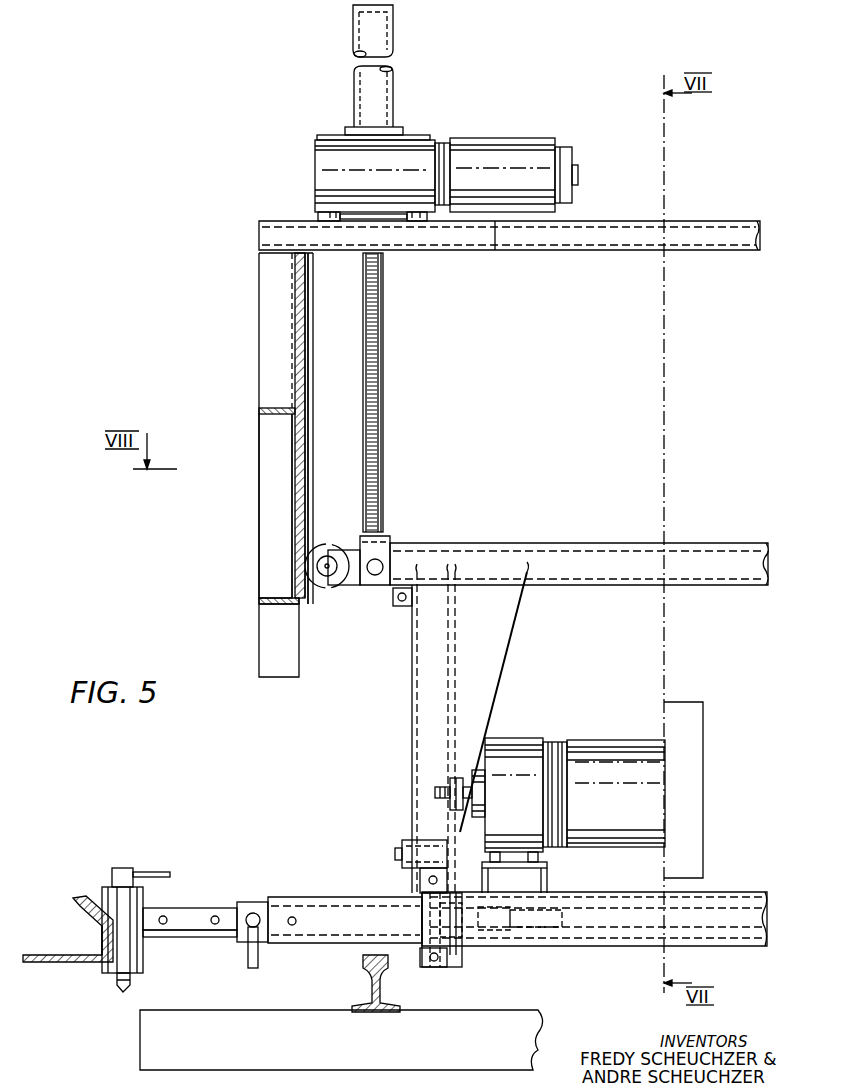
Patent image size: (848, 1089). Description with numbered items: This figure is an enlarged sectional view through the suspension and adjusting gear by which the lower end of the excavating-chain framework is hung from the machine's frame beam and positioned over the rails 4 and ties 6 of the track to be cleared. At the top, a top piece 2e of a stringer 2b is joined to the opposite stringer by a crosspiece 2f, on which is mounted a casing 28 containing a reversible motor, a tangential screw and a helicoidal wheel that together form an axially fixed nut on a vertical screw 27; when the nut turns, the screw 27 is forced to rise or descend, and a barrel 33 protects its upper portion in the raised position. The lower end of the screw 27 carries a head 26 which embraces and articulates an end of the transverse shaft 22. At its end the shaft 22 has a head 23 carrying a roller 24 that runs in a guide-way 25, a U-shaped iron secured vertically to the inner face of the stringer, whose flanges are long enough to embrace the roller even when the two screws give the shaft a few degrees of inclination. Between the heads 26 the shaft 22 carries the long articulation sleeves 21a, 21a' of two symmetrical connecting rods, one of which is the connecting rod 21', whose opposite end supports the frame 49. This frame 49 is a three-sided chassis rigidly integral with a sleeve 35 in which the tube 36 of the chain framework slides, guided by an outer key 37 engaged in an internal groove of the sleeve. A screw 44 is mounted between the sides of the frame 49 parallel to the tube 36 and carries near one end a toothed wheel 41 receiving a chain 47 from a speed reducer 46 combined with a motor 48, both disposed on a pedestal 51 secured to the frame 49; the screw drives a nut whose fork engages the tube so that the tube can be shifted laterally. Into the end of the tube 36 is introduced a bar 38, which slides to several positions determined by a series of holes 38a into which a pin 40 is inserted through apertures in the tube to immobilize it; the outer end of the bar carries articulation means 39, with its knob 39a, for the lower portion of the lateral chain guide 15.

The barrel 33 is at (382, 86).
The casing 28 is at (512, 143).
The crosspiece 2f is at (650, 229).
The top piece 2e is at (272, 320).
The stringer 2b is at (265, 440).
The guide-way 25 is at (312, 451).
The screw 27 is at (383, 383).
The roller 24 is at (328, 543).
The head 23 is at (330, 578).
The head 26 is at (385, 555).
The shaft 22 is at (600, 551).
The articulation sleeve 21a' is at (577, 582).
The articulation sleeve 21a is at (577, 599).
The connecting rod 21' is at (479, 727).
The chain 47 is at (448, 812).
The speed reducer 46 is at (504, 748).
The motor 48 is at (604, 743).
The pedestal 51 is at (537, 880).
The outer key 37 is at (328, 897).
The screw 44 is at (590, 920).
The frame 49 is at (742, 892).
The sleeve 35 is at (444, 958).
The toothed wheel 41 is at (460, 953).
The bar 38 is at (193, 912).
The hole 38a is at (215, 925).
The tube 36 is at (252, 902).
The pin 40 is at (258, 926).
The articulation means 39 is at (110, 887).
The knob 39a is at (123, 870).
The guide 15 is at (53, 961).
The rail 4 is at (360, 967).
The tie 6 is at (497, 1010).